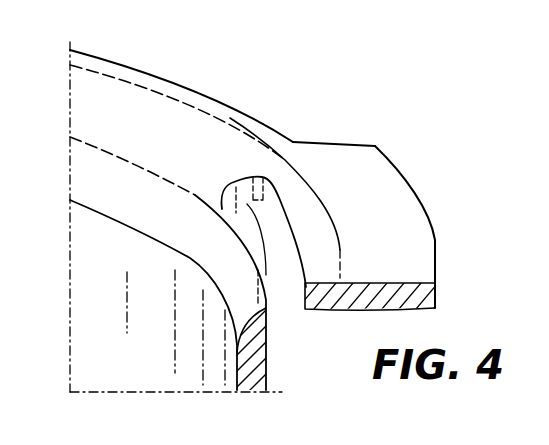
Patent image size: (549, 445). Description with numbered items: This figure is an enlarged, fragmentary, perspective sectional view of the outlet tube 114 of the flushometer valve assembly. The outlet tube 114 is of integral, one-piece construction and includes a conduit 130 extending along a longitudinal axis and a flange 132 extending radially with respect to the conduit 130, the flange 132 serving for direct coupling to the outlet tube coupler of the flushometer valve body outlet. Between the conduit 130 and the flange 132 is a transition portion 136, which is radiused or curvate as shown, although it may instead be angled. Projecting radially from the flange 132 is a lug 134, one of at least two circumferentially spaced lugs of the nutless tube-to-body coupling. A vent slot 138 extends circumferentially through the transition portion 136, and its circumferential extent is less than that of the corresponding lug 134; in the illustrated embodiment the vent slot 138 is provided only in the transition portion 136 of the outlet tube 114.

The outlet tube 114 is at (250, 45).
The conduit 130 is at (257, 380).
The flange 132 is at (304, 112).
The lug 134 is at (392, 118).
The transition portion 136 is at (135, 96).
The vent slot 138 is at (242, 202).